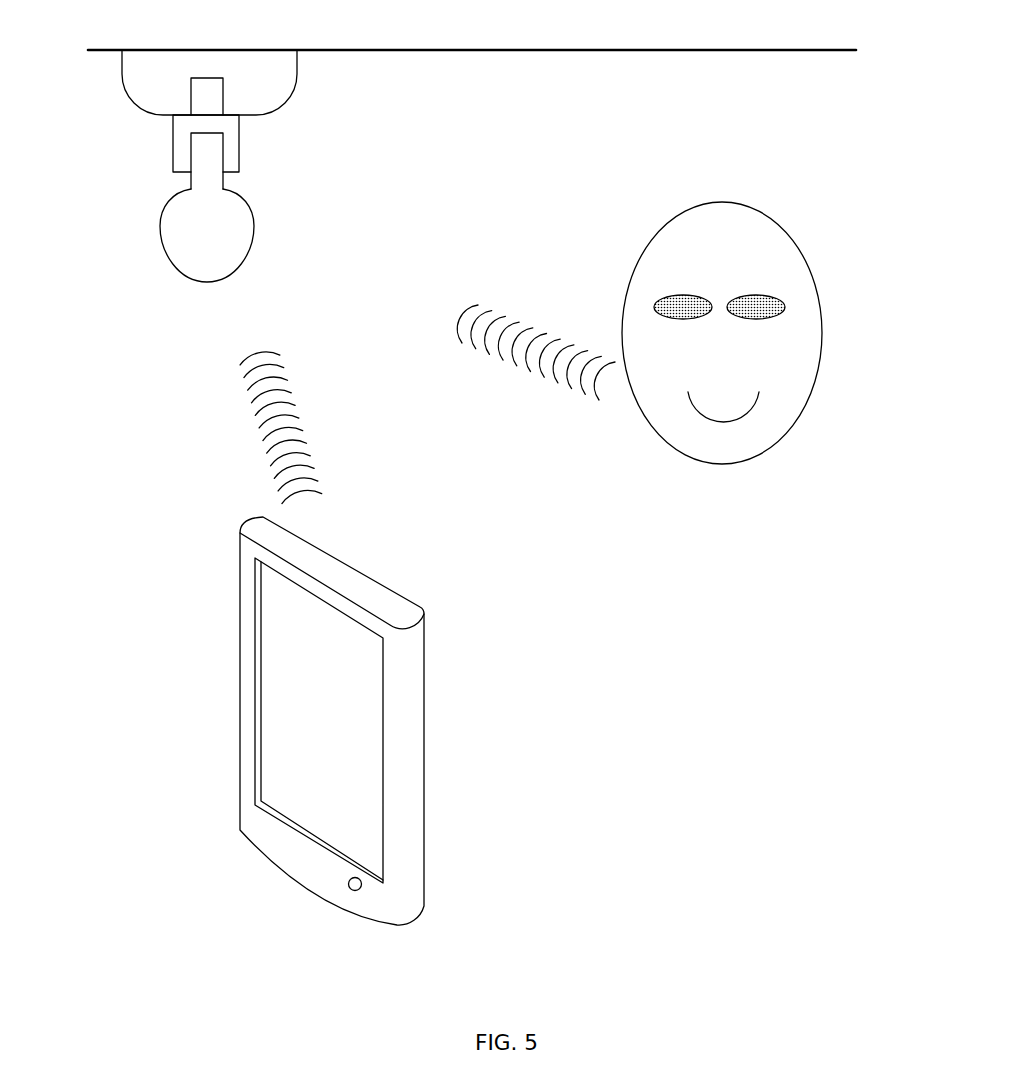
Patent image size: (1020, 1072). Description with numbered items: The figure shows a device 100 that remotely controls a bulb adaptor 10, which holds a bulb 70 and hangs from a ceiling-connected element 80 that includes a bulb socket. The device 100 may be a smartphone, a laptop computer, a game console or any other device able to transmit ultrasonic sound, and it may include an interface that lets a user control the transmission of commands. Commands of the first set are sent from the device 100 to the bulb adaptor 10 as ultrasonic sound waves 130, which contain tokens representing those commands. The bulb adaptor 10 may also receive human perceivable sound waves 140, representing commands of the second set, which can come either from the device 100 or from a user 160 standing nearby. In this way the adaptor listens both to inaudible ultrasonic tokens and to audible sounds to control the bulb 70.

The bulb adaptor 10 is at (153, 162).
The bulb 70 is at (227, 249).
The fixture base / dome 80 is at (285, 92).
The device 100 is at (292, 750).
The ultrasonic sound waves 130 is at (292, 417).
The human perceivable sound waves 140 is at (568, 337).
The user 160 is at (747, 457).